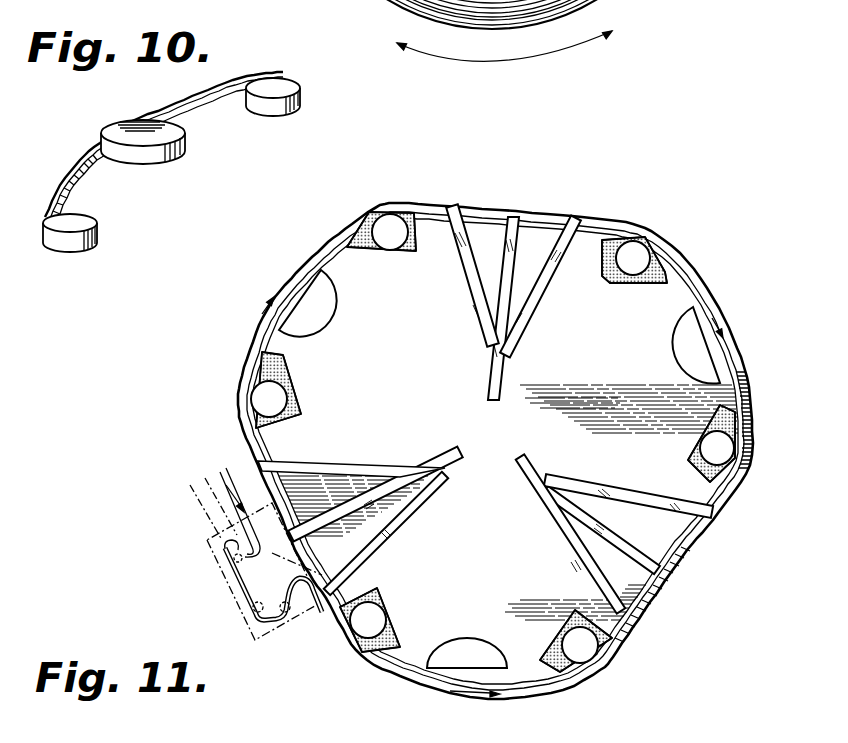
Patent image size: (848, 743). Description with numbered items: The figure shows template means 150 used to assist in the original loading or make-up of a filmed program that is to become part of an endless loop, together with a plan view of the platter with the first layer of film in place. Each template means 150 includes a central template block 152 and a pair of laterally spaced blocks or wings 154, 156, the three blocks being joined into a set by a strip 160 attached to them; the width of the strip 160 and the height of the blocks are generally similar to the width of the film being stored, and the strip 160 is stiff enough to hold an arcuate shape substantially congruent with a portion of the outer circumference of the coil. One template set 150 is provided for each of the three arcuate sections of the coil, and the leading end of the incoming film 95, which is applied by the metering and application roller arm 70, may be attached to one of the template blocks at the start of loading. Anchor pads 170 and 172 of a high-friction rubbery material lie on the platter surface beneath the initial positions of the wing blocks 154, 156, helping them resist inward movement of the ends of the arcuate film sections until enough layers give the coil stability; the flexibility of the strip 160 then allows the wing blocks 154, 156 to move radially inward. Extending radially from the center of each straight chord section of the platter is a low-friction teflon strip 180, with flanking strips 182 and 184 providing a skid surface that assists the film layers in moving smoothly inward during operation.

In FIG. 11, the metering and application roller arm 70 is at (229, 610).
In FIG. 11, the incoming film 95 is at (235, 517).
In FIG. 10, the template means 150 is at (222, 72).
In FIG. 11, the template means 150 is at (300, 252).
In FIG. 10, the central template block 152 is at (148, 142).
In FIG. 11, the central template block 152 is at (313, 307).
In FIG. 10, the wing block 154 is at (70, 230).
In FIG. 11, the wing block 154 is at (634, 258).
In FIG. 10, the wing block 156 is at (260, 114).
In FIG. 11, the wing block 156 is at (388, 226).
In FIG. 10, the strip 160 is at (72, 168).
In FIG. 11, the strip 160 is at (741, 371).
In FIG. 11, the anchor pad 170 is at (602, 237).
In FIG. 11, the anchor pad 172 is at (430, 242).
In FIG. 11, the strip 180 is at (513, 257).
In FIG. 11, the flanking strip 182 is at (540, 290).
In FIG. 11, the flanking strip 184 is at (464, 266).